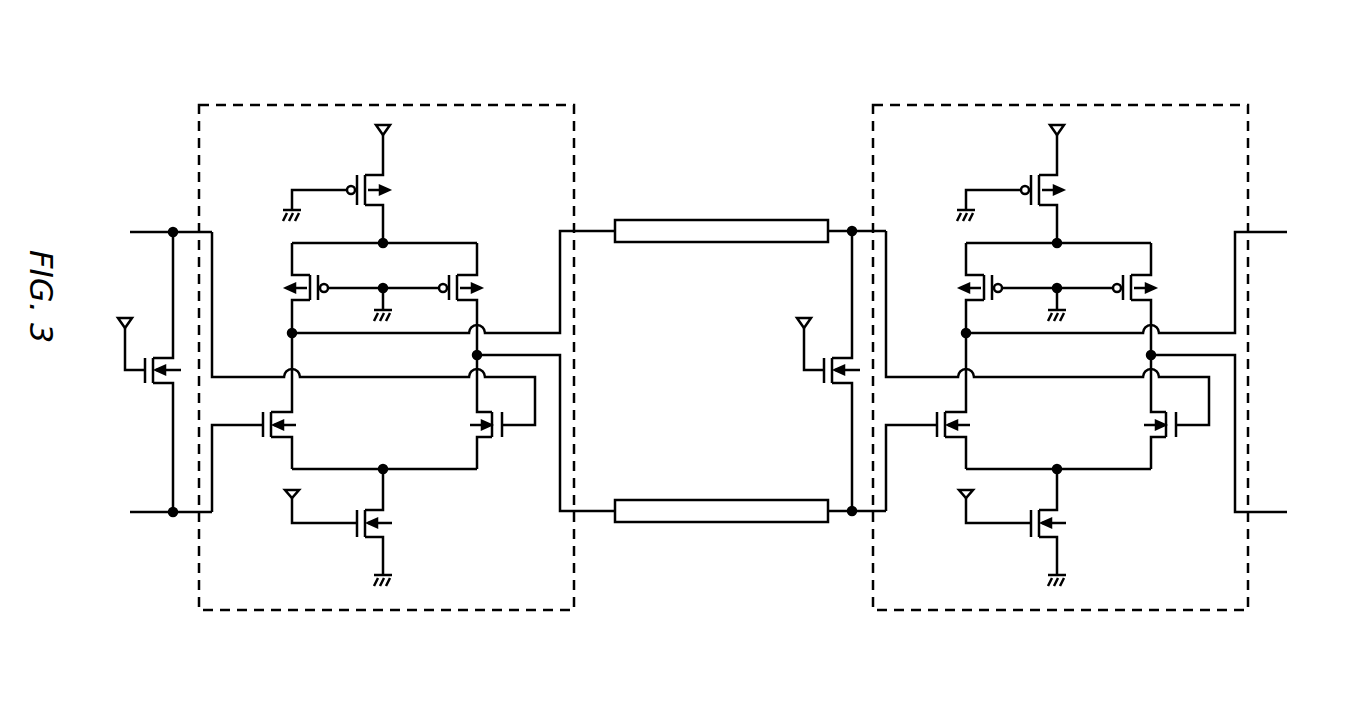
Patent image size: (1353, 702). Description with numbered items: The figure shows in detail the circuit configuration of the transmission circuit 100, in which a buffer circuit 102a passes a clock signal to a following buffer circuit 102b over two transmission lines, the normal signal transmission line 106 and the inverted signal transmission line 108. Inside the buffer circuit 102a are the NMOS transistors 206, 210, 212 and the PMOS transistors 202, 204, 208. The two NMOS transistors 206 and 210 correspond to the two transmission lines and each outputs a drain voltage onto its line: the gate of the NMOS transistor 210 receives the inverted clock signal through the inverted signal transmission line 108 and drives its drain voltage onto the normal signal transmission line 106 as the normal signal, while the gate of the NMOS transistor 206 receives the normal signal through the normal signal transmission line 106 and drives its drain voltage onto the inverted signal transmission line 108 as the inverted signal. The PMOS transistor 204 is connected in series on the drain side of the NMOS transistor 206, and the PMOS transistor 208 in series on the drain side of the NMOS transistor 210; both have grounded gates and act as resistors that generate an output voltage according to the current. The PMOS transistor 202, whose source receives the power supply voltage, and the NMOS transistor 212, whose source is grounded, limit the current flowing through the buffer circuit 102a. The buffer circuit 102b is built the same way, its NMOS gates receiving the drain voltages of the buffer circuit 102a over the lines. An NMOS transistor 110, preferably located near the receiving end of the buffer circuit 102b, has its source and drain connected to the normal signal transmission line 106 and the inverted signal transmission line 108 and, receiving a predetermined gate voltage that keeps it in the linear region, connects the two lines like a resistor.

The transmission circuit 100 is at (1213, 22).
The buffer circuit 102a is at (387, 104).
The buffer circuit 102b is at (1061, 104).
The normal signal transmission line 106 is at (724, 218).
The inverted signal transmission line 108 is at (724, 498).
The NMOS transistor 110 is at (163, 385).
The PMOS transistor 202 is at (375, 179).
The PMOS transistor 204 is at (478, 280).
The NMOS transistor 206 is at (487, 440).
The PMOS transistor 208 is at (292, 277).
The NMOS transistor 210 is at (276, 440).
The NMOS transistor 212 is at (375, 511).